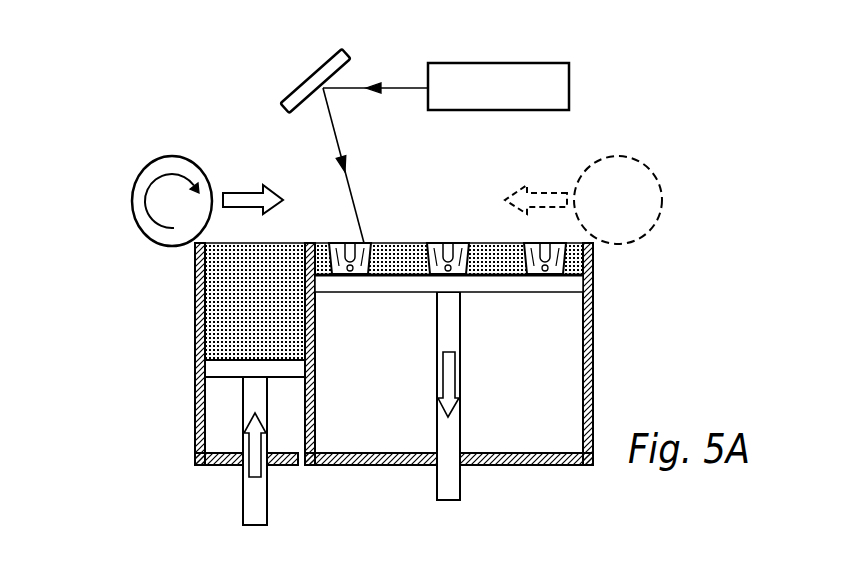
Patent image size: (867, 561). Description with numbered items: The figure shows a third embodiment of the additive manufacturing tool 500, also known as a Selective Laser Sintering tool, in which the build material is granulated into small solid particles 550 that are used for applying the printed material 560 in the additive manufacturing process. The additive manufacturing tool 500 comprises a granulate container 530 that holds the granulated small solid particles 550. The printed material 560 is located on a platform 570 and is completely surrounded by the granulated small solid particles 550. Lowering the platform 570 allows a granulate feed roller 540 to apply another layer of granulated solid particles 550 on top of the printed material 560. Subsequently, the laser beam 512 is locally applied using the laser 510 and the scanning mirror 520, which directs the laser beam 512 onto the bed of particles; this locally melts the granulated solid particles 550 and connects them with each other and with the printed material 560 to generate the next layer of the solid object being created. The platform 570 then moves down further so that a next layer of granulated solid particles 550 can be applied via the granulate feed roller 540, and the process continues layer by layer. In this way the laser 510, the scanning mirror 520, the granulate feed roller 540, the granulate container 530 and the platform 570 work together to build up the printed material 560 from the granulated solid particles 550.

The additive manufacturing tool 500 is at (122, 74).
The laser 510 is at (502, 80).
The laser beam 512 is at (348, 183).
The scanning mirror 520 is at (310, 84).
The granulate container 530 is at (197, 389).
The granulate feed roller 540 is at (137, 202).
The granulated small solid particles 550 is at (238, 317).
The printed material 560 is at (363, 276).
The platform 570 is at (573, 283).